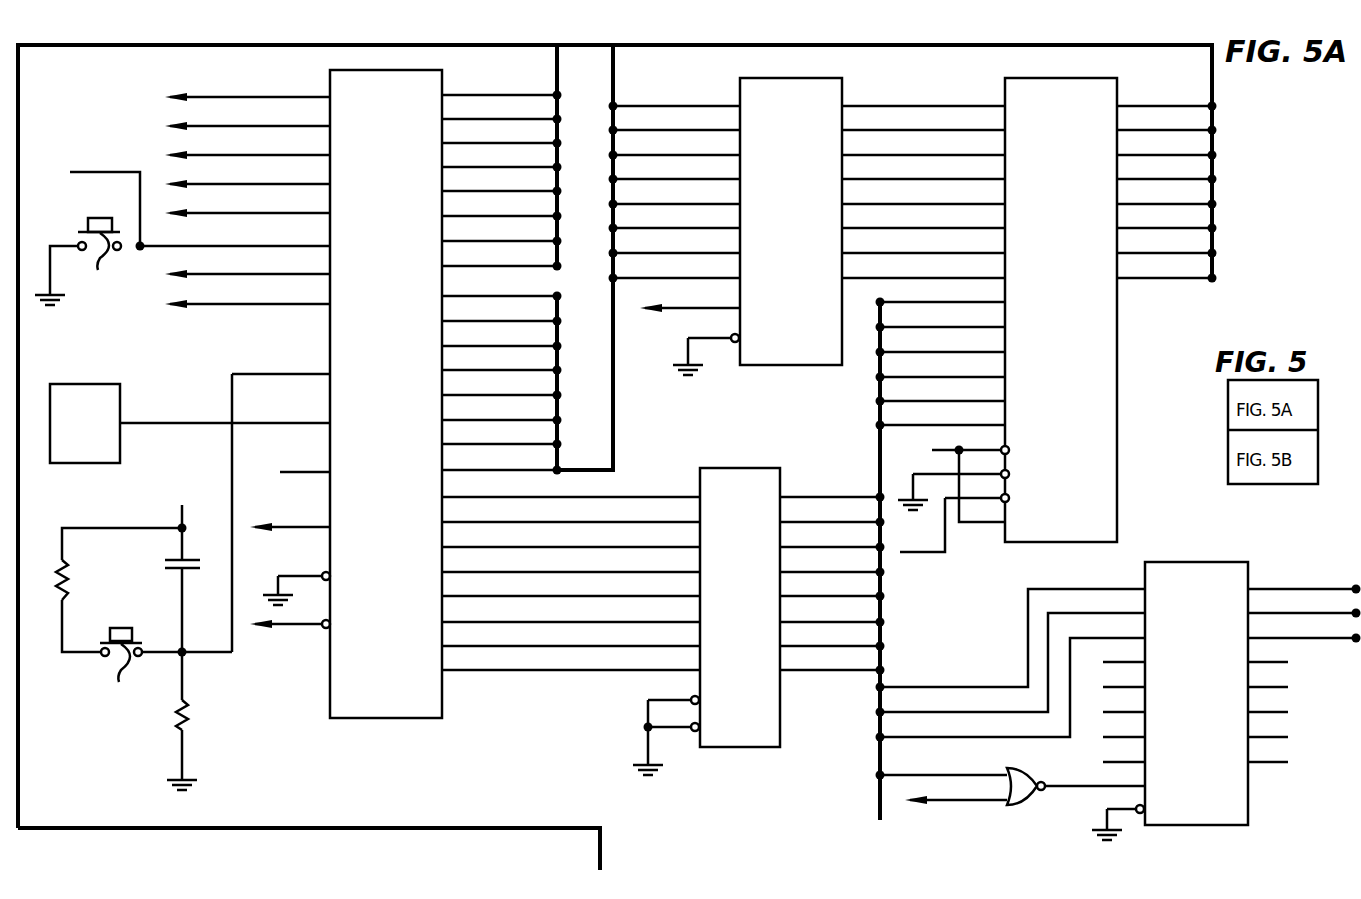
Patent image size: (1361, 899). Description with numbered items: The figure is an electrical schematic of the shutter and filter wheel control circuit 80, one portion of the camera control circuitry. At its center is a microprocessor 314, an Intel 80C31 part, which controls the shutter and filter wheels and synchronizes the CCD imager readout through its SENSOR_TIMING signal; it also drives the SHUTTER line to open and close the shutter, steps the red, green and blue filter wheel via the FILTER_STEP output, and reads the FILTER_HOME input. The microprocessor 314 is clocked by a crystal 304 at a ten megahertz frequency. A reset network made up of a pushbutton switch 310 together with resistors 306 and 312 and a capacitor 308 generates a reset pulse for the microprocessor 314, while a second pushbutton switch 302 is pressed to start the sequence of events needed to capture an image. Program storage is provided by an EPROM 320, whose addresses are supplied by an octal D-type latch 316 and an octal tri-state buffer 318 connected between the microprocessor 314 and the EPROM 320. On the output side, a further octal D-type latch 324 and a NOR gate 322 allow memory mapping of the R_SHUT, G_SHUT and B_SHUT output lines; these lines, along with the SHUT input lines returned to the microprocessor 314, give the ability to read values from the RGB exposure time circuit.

The shutter and filter wheel control circuit 80 is at (1050, 33).
The pushbutton switch 302 is at (182, 226).
The crystal 304 is at (122, 388).
The resistor 306 is at (68, 582).
The capacitor 308 is at (168, 576).
The pushbutton switch 310 is at (112, 657).
The resistor 312 is at (200, 706).
The microprocessor 314 is at (382, 718).
The octal D-type latch 316 is at (824, 366).
The octal tri-state buffer 318 is at (770, 748).
The EPROM 320 is at (1092, 546).
The nor gate 322 is at (1034, 806).
The octal D-type latch 324 is at (1230, 819).